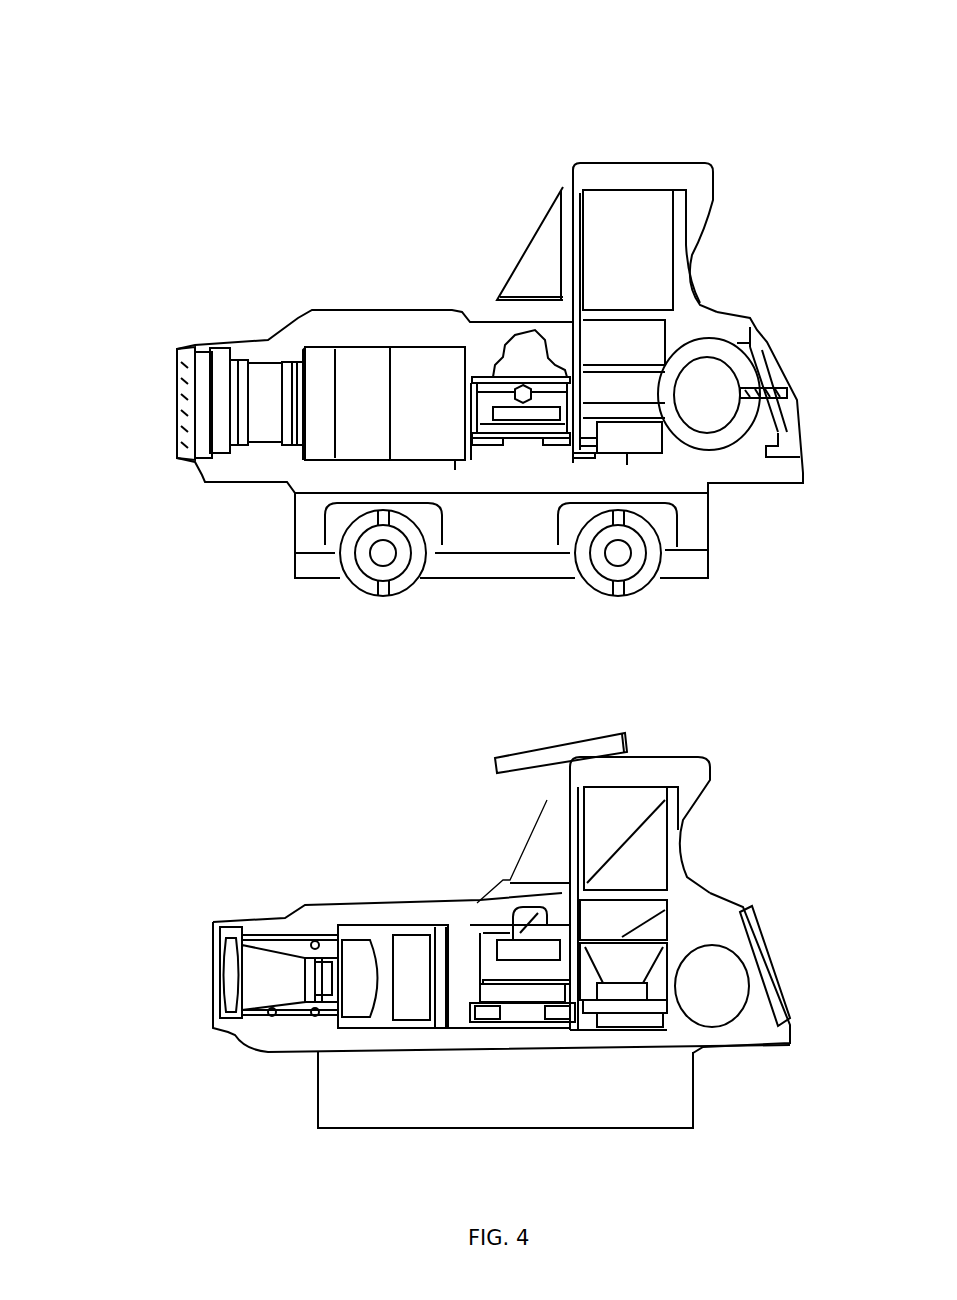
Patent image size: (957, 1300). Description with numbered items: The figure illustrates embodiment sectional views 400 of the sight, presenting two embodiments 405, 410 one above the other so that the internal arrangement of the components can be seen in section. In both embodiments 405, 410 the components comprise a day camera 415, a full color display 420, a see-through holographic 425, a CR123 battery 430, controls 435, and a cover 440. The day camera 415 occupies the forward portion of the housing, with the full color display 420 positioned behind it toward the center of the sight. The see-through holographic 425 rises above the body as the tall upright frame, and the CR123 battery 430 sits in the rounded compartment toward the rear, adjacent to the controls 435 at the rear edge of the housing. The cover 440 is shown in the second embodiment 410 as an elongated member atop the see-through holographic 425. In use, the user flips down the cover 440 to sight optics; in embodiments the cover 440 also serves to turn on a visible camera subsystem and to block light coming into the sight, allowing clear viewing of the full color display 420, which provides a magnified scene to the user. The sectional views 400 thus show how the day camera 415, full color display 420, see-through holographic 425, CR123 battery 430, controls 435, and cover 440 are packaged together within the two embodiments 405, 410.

The sectional views 400 is at (56, 40).
The embodiment 405 is at (452, 453).
The embodiment 410 is at (446, 1010).
The day camera 415 is at (378, 342).
The full color display 420 is at (530, 366).
The see-through holographic 425 is at (578, 233).
The CR123 battery 430 is at (694, 334).
The controls 435 is at (749, 309).
The cover 440 is at (562, 733).